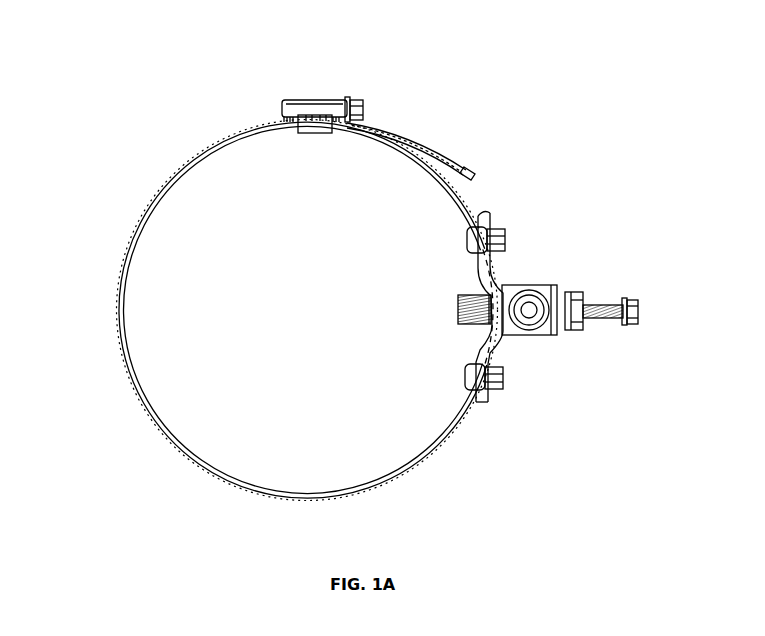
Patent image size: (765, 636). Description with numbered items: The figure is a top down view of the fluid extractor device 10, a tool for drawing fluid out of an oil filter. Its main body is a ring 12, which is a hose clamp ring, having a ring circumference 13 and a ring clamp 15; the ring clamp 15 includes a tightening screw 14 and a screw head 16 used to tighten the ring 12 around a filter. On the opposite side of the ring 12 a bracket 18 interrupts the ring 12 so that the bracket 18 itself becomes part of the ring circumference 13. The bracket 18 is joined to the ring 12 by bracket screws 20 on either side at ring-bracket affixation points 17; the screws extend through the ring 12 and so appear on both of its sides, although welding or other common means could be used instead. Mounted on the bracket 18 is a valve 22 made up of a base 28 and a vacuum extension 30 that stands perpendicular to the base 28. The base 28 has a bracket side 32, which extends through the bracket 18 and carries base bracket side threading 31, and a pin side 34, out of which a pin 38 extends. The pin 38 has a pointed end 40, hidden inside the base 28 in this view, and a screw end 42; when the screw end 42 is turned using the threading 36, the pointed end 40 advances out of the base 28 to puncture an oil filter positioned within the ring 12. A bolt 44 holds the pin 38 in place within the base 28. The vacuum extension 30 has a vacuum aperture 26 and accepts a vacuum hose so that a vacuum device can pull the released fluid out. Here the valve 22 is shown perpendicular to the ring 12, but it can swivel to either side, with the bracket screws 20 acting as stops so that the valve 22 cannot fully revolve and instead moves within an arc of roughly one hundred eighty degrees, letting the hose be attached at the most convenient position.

The fluid extractor device 10 is at (156, 46).
The ring 12 is at (188, 168).
The ring circumference 13 is at (118, 268).
The tightening screw 14 is at (283, 114).
The ring clamp 15 is at (318, 133).
The screw head 16 is at (374, 100).
The ring-bracket affixation points 17 is at (494, 227).
The bracket 18 is at (472, 250).
The bracket screws 20 is at (507, 392).
The valve 22 is at (549, 326).
The vacuum aperture 26 is at (531, 300).
The base 28 is at (512, 337).
The vacuum extension 30 is at (550, 291).
The base bracket side threading 31 is at (460, 322).
The bracket side 32 is at (487, 292).
The pin side 34 is at (553, 337).
The threading 36 is at (598, 320).
The pin 38 is at (629, 322).
The pointed end 40 is at (438, 306).
The screw end 42 is at (627, 298).
The bolt 44 is at (575, 330).